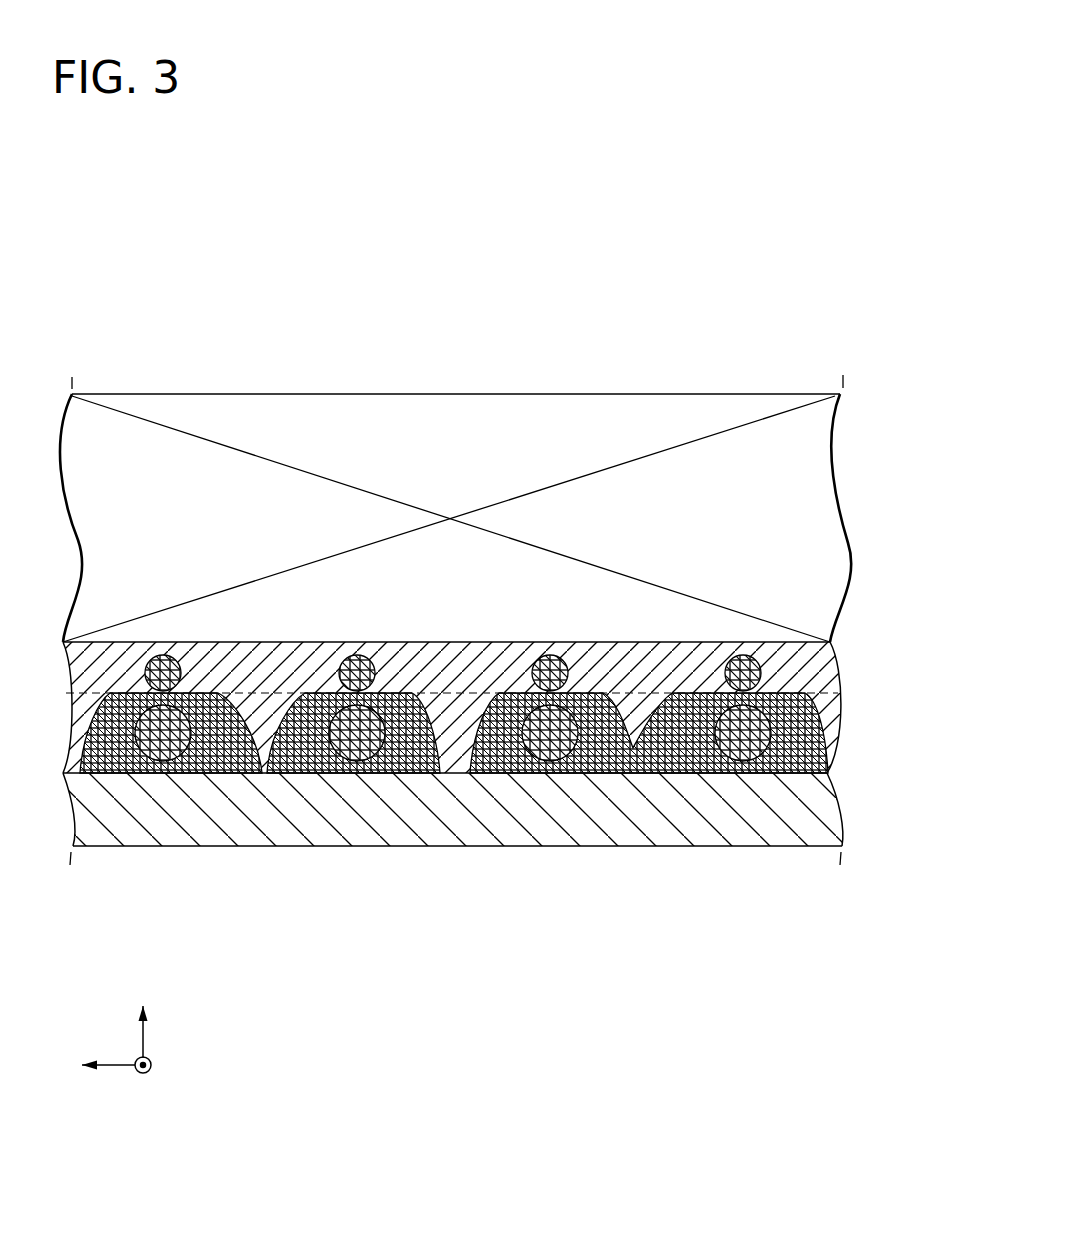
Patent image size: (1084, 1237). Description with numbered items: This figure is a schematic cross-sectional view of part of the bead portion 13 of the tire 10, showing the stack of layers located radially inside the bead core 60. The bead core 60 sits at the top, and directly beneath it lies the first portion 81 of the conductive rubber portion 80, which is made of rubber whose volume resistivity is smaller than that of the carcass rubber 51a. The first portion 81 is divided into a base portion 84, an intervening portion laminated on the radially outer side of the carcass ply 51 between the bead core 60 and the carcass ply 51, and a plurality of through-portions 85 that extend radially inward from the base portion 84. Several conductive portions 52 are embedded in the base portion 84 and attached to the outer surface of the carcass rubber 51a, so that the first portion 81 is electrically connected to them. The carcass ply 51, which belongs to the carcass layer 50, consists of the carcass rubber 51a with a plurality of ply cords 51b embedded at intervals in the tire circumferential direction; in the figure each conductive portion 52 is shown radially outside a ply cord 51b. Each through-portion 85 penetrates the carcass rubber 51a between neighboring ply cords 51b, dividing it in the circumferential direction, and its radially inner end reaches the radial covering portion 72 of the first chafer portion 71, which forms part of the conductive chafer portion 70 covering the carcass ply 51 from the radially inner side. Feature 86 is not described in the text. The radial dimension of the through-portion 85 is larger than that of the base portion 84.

The tire 10 is at (747, 249).
The bead portion 13 is at (821, 356).
The carcass layer 50 is at (123, 326).
The carcass ply 51 is at (104, 638).
The carcass rubber 51a is at (125, 765).
The ply cords 51b is at (163, 742).
The conductive portion 52 is at (356, 656).
The bead core 60 is at (340, 418).
The chafer portion 70 is at (455, 897).
The first chafer portion 71 is at (608, 853).
The radial covering portion 72 is at (450, 822).
The conductive rubber portion 80 is at (841, 665).
The first portion 81 is at (400, 326).
The base portion 84 is at (410, 660).
The through-portion 85 is at (455, 728).
The recess 86 is at (262, 745).